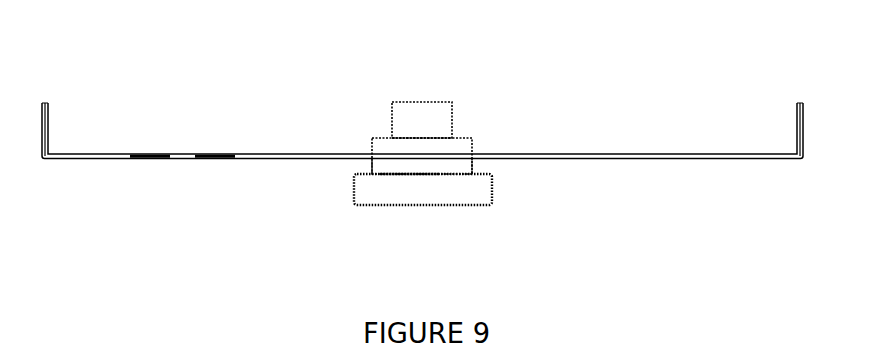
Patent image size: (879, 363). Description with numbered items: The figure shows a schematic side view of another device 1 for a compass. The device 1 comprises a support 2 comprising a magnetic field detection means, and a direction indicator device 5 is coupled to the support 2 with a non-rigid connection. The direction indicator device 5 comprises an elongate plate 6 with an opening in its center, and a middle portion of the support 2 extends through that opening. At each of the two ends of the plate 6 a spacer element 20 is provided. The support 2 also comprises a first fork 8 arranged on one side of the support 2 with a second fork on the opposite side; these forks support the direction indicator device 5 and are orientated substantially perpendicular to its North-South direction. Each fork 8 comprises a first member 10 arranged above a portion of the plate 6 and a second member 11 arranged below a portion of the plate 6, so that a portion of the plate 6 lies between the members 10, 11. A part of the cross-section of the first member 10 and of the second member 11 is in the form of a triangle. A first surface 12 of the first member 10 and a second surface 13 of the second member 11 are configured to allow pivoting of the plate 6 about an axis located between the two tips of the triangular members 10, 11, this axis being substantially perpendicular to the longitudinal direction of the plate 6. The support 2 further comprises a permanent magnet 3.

The device 1 is at (612, 137).
The spacer element 20 is at (48, 125).
The direction indicator device 5 is at (147, 155).
The plate 6 is at (210, 155).
The support 2 is at (452, 115).
The first surface 12 is at (428, 149).
The first fork 8 is at (438, 170).
The first member 10 is at (422, 150).
The permanent magnet 3 is at (483, 185).
The second surface 13 is at (410, 172).
The second member 11 is at (423, 178).